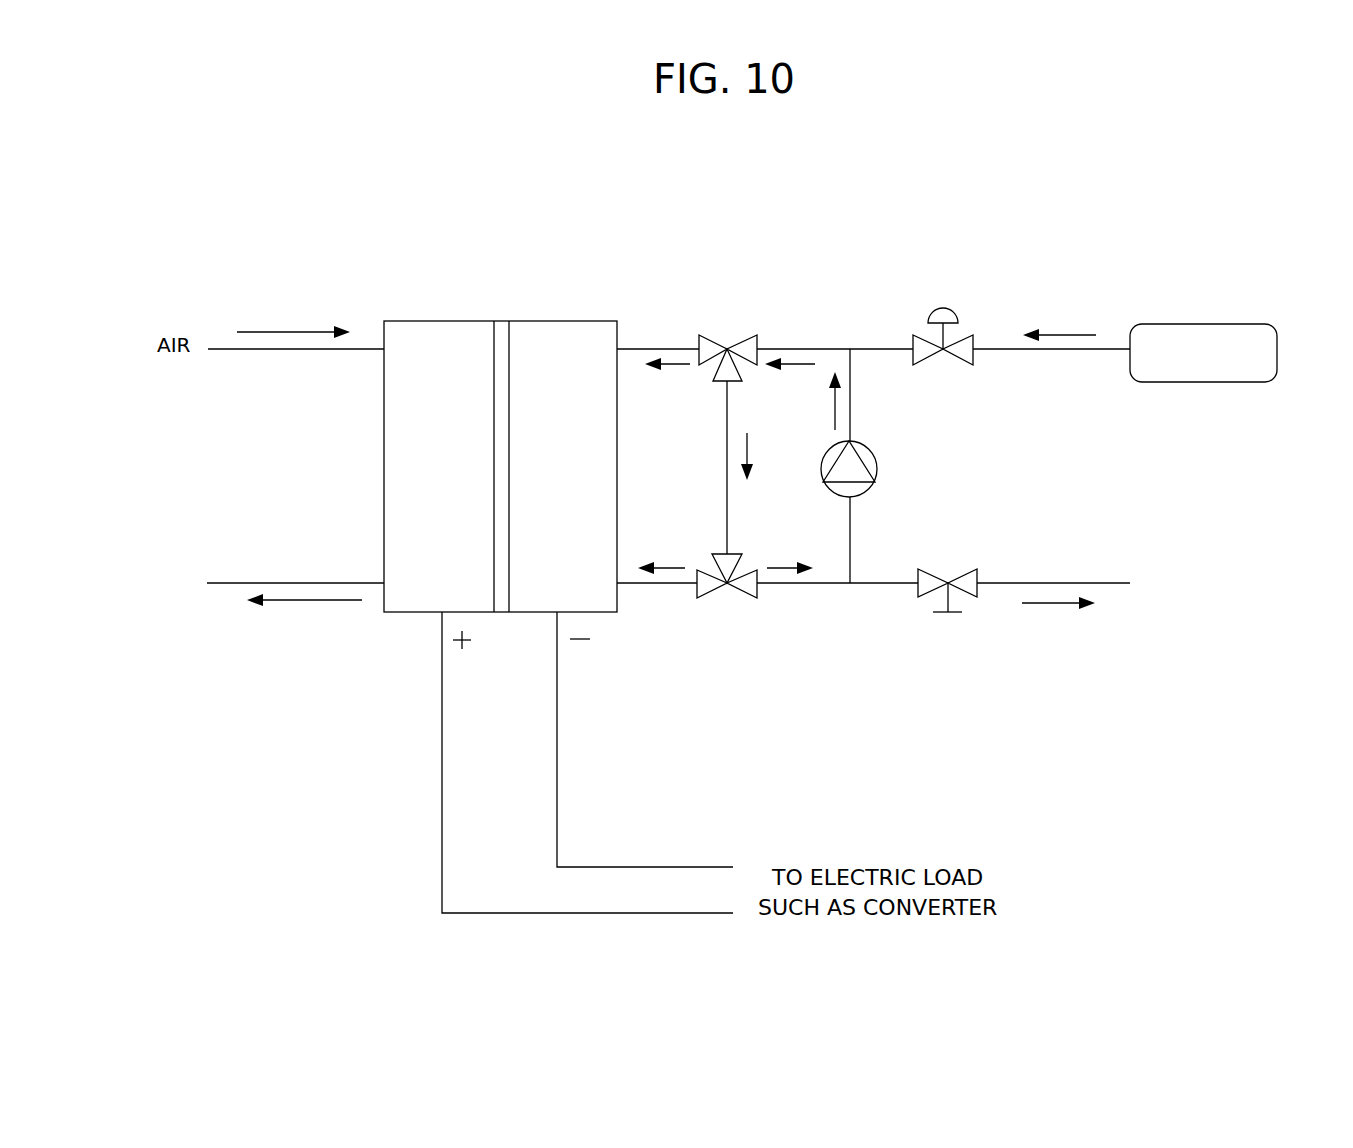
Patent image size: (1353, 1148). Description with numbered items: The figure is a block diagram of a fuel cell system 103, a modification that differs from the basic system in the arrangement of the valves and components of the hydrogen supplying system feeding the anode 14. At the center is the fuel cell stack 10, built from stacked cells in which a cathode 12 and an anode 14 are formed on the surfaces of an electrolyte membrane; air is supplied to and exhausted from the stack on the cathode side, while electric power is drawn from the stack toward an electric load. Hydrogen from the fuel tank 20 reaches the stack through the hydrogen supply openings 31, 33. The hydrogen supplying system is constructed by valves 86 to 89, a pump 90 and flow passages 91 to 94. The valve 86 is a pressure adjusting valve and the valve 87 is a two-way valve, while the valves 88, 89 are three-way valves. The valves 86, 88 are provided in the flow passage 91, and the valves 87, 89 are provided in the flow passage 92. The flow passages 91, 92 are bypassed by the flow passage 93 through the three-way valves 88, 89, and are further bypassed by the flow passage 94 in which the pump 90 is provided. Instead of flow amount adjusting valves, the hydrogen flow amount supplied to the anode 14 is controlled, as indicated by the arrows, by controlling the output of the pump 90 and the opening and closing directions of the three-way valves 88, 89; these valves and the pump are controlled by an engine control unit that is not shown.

The fuel cell system 103 is at (675, 163).
The fuel cell stack 10 is at (500, 384).
The cathode 12 is at (420, 321).
The anode 14 is at (572, 321).
The fuel tank 20 is at (1200, 323).
The hydrogen supply opening 31 is at (620, 349).
The hydrogen supply opening 33 is at (620, 584).
The valve 86 is at (945, 307).
The valve 87 is at (948, 613).
The three-way valve 88 is at (713, 337).
The three-way valve 89 is at (748, 596).
The pump 90 is at (877, 462).
The flow passage 91 is at (834, 345).
The flow passage 92 is at (825, 583).
The flow passage 93 is at (727, 468).
The flow passage 94 is at (850, 400).